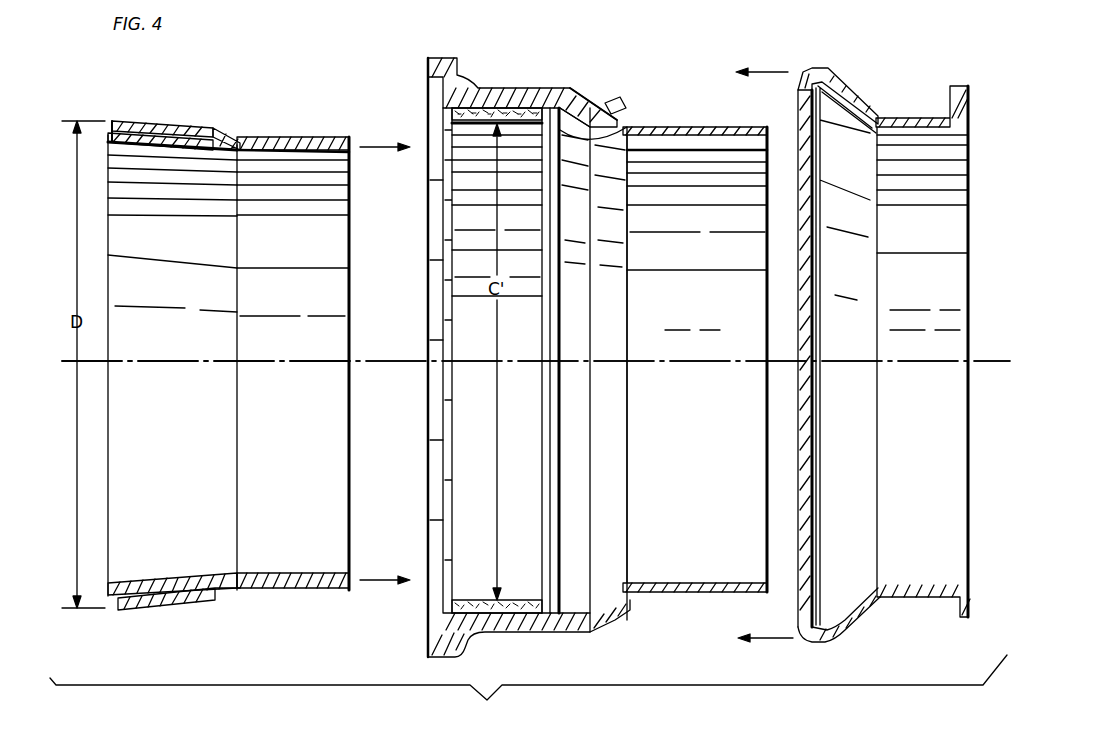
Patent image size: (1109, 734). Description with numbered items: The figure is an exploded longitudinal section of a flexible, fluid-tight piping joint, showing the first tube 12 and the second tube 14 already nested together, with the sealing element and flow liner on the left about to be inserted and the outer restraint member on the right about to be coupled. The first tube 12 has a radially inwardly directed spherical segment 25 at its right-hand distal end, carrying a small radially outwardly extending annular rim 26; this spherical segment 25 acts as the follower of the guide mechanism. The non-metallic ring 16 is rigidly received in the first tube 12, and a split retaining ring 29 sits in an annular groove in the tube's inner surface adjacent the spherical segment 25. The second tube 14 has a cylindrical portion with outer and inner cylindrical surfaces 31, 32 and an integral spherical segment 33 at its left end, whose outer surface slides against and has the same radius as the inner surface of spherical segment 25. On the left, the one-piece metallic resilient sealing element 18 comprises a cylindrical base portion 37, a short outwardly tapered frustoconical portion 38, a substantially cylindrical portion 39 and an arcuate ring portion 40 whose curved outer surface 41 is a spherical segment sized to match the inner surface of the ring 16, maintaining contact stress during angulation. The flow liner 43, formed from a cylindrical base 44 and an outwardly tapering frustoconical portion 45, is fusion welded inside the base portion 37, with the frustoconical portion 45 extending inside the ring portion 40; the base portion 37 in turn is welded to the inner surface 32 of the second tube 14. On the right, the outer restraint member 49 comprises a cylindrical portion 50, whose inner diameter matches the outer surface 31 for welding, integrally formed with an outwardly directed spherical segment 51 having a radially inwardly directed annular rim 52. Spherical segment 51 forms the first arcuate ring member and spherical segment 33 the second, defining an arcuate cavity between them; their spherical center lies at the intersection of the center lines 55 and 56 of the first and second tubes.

The first tube 12 is at (513, 86).
The second tube 14 is at (682, 126).
The non-metallic ring 16 is at (480, 104).
The annular sealing element 18 is at (162, 124).
The spherical segment 25 is at (587, 92).
The annular rim 26 is at (617, 98).
The split retaining ring 29 is at (535, 233).
The outer cylindrical surface 31 is at (663, 127).
The inner cylindrical surface 32 is at (673, 137).
The spherical segment 33 is at (607, 133).
The cylindrical base portion 37 is at (278, 138).
The frustoconical portion 38 is at (240, 140).
The cylindrical portion 39 is at (196, 127).
The ring portion 40 is at (140, 120).
The curved outer surface 41 is at (121, 119).
The flow liner 43 is at (277, 153).
The cylindrical base 44 is at (250, 153).
The frustoconical portion 45 is at (188, 147).
The outer restraint member 49 is at (867, 92).
The cylindrical portion 50 is at (912, 112).
The spherical segment 51 is at (837, 77).
The annular rim 52 is at (797, 92).
The center line 55 is at (372, 363).
The center line 56 is at (372, 363).